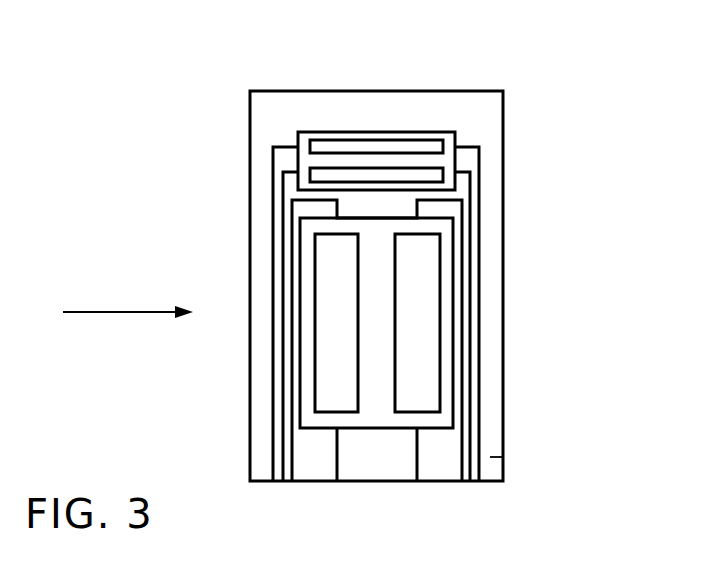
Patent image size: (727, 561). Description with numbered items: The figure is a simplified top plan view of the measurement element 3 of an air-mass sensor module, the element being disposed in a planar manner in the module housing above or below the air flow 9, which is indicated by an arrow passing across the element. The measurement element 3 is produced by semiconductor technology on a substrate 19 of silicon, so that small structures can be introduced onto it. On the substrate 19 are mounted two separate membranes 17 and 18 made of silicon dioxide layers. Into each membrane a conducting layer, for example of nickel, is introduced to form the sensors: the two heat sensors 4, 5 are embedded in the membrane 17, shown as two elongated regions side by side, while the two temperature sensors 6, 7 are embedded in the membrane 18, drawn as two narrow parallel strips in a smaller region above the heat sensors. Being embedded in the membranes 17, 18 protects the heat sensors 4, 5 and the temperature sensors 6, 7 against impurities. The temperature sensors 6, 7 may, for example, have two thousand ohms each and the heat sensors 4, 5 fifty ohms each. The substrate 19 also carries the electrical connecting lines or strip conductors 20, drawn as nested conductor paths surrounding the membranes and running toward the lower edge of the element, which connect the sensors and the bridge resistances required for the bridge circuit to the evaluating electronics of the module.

The measurement element 3 is at (520, 105).
The heat sensor 4 is at (335, 295).
The heat sensor 5 is at (425, 343).
The temperature sensor 6 is at (427, 140).
The temperature sensor 7 is at (453, 180).
The air flow 9 is at (128, 299).
The membrane 17 is at (375, 413).
The membrane 18 is at (302, 140).
The substrate 19 is at (490, 457).
The strip conductors 20 is at (480, 265).